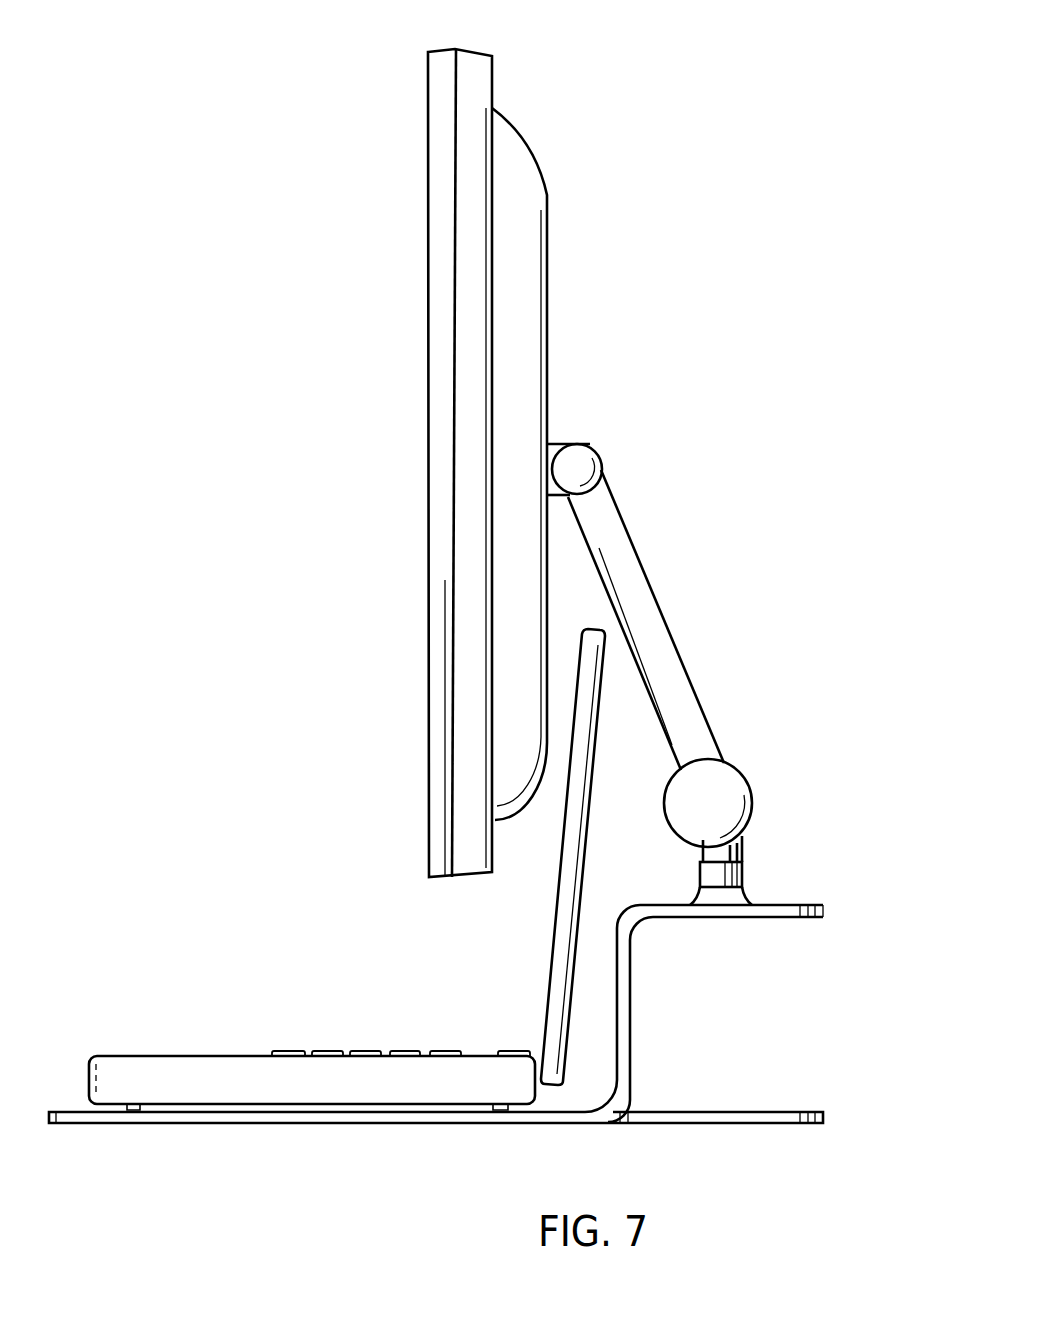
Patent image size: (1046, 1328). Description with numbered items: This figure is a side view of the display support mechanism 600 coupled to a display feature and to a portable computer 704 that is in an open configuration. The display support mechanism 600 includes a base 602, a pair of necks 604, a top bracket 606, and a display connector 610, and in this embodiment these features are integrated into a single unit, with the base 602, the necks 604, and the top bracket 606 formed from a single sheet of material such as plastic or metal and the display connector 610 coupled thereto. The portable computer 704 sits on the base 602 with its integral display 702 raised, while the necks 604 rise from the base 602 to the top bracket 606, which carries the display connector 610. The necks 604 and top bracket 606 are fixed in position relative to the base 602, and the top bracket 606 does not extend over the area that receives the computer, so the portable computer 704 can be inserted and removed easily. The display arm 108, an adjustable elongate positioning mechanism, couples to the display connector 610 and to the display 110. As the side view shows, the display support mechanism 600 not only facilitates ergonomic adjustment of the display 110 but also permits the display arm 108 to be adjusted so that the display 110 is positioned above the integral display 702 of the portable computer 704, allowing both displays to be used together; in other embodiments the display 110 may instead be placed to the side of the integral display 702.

The display 110 is at (480, 52).
The display arm 108 is at (663, 605).
The display connector 610 is at (745, 868).
The top bracket 606 is at (823, 912).
The necks 604 is at (632, 1033).
The base 602 is at (533, 1125).
The portable computer 704 is at (258, 1094).
The integral display 702 is at (553, 952).
The display support mechanism 600 is at (828, 1011).